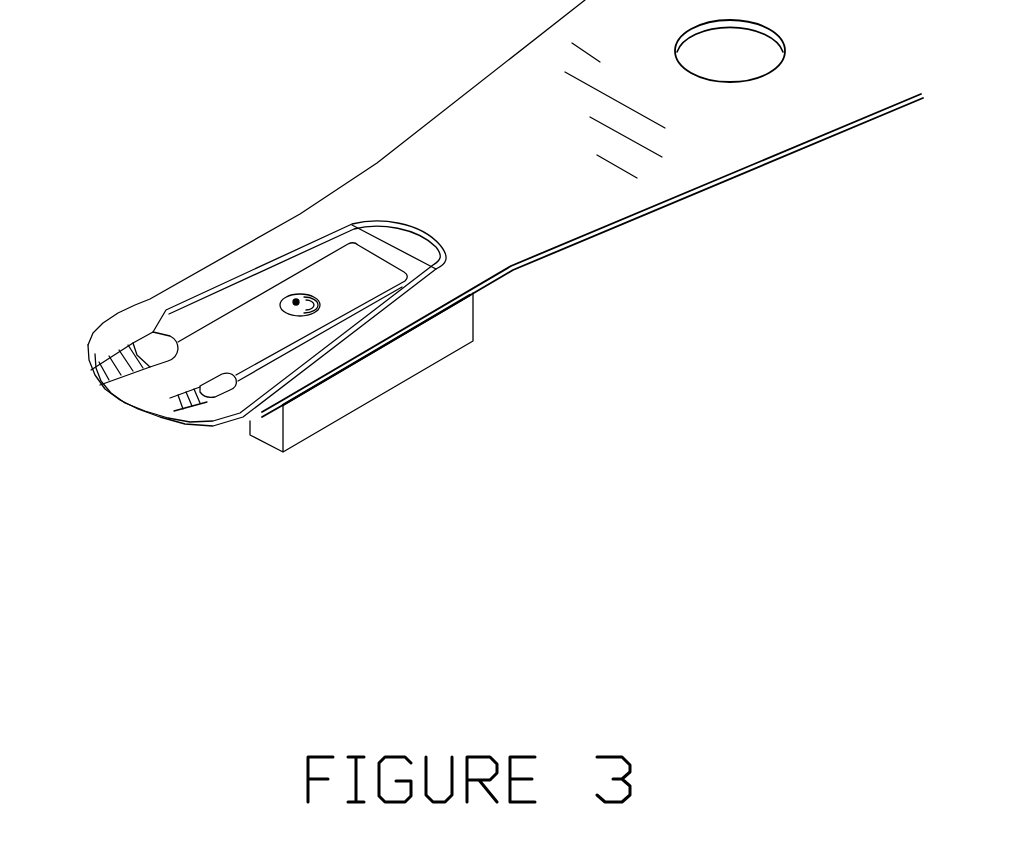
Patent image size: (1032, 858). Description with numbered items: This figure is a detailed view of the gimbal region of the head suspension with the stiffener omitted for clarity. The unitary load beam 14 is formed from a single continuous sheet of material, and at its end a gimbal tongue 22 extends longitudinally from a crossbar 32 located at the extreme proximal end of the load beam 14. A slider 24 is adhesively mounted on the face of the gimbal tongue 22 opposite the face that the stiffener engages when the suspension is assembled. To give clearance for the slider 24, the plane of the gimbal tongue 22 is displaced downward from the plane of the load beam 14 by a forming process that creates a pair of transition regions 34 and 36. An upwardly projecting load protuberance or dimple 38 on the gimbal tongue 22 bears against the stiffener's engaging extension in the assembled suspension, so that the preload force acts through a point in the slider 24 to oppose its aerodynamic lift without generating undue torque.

The load beam 14 is at (556, 133).
The gimbal tongue 22 is at (261, 349).
The slider 24 is at (397, 382).
The crossbar 32 is at (152, 390).
The transition region 34 is at (180, 407).
The transition region 36 is at (113, 371).
The load protuberance 38 is at (307, 295).